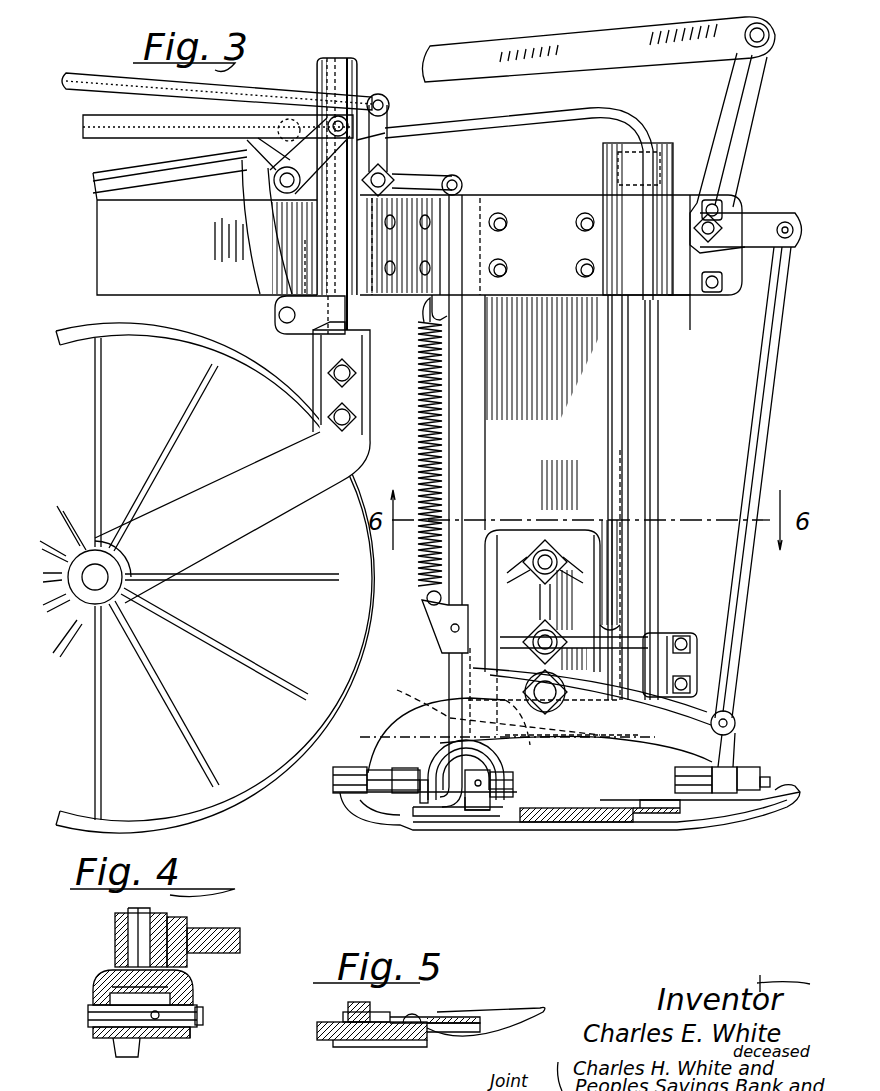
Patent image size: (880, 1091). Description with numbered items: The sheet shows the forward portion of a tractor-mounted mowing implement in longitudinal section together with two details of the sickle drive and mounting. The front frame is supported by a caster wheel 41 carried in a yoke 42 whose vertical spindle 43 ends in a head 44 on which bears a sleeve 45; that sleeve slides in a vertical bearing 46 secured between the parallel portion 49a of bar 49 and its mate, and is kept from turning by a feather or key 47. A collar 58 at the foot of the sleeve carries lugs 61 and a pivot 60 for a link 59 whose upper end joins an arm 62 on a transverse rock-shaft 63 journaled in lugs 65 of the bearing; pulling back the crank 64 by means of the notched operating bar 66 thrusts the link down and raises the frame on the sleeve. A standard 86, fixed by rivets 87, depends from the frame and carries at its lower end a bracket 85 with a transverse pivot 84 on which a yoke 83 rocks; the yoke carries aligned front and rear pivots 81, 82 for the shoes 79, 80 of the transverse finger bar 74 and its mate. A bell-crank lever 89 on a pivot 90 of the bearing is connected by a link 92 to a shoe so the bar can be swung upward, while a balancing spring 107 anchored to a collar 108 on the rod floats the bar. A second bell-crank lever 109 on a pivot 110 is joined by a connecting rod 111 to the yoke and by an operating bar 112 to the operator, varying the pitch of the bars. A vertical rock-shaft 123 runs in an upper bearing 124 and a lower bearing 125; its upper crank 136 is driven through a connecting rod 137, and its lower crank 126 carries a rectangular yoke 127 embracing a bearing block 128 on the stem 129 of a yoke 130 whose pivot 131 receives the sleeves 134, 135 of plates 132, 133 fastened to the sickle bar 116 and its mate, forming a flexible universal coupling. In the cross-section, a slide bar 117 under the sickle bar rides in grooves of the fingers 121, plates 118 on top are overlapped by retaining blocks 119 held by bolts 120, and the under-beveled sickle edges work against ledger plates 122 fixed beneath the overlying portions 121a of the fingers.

In FIG. 3, the caster wheel 41 is at (168, 344).
In FIG. 3, the yoke 42 is at (250, 480).
In FIG. 3, the vertical spindle 43 is at (342, 56).
In FIG. 3, the head 44 is at (313, 391).
In FIG. 3, the sleeve 45 is at (357, 70).
In FIG. 3, the vertical bearing 46 is at (244, 298).
In FIG. 3, the feather or key 47 is at (315, 72).
In FIG. 3, the bar 49 is at (364, 297).
In FIG. 3, the parallel portion of bar 49a is at (536, 205).
In FIG. 3, the collar or flange 58 is at (330, 330).
In FIG. 3, the link 59 is at (267, 257).
In FIG. 3, the pivot 60 is at (279, 316).
In FIG. 3, the lugs 61 is at (300, 336).
In FIG. 3, the arm 62 is at (275, 172).
In FIG. 3, the rock-shaft 63 is at (288, 184).
In FIG. 3, the crank 64 is at (275, 168).
In FIG. 3, the lugs 65 is at (293, 200).
In FIG. 3, the operating bar 66 is at (83, 127).
In FIG. 3, the transverse bar 74 is at (552, 824).
In FIG. 5, the transverse bar 74 is at (317, 1033).
In FIG. 3, the shoe 79 is at (372, 806).
In FIG. 3, the shoe 80 is at (420, 822).
In FIG. 3, the front pivot 81 is at (768, 777).
In FIG. 3, the rear pivot 82 is at (343, 792).
In FIG. 3, the yoke or bracket 83 is at (665, 743).
In FIG. 3, the transverse pivot 84 is at (577, 753).
In FIG. 3, the bracket 85 is at (600, 545).
In FIG. 3, the standard 86 is at (596, 400).
In FIG. 3, the rivets 87 is at (583, 268).
In FIG. 3, the bell-crank lever 89 is at (384, 116).
In FIG. 3, the pivot 90 is at (424, 182).
In FIG. 3, the link 92 is at (452, 663).
In FIG. 3, the balancing spring 107 is at (424, 448).
In FIG. 3, the collar 108 is at (457, 617).
In FIG. 3, the bell-crank lever 109 is at (738, 90).
In FIG. 3, the pivot 110 is at (710, 240).
In FIG. 3, the connecting rod 111 is at (762, 358).
In FIG. 3, the operating bar 112 is at (560, 70).
In FIG. 3, the sickle bar 116 is at (648, 818).
In FIG. 5, the sickle bar 116 is at (440, 1030).
In FIG. 3, the slide bar 117 is at (636, 820).
In FIG. 5, the slide bar 117 is at (427, 1033).
In FIG. 5, the plate 118 is at (383, 1025).
In FIG. 5, the retaining block 119 is at (380, 1022).
In FIG. 5, the bolt 120 is at (348, 1012).
In FIG. 5, the finger 121 is at (523, 1013).
In FIG. 5, the overlying portion of finger 121a is at (440, 1020).
In FIG. 5, the ledger plate 122 is at (467, 1018).
In FIG. 3, the rock-shaft 123 is at (650, 356).
In FIG. 3, the bearing 124 is at (672, 294).
In FIG. 3, the bearing 125 is at (664, 642).
In FIG. 3, the crank 126 is at (607, 740).
In FIG. 4, the crank 126 is at (240, 930).
In FIG. 3, the rectangular yoke 127 is at (563, 727).
In FIG. 4, the rectangular yoke 127 is at (174, 918).
In FIG. 3, the bearing block 128 is at (447, 693).
In FIG. 4, the bearing block 128 is at (117, 917).
In FIG. 3, the stem 129 is at (452, 680).
In FIG. 4, the stem 129 is at (140, 937).
In FIG. 3, the yoke 130 is at (443, 772).
In FIG. 4, the yoke 130 is at (95, 987).
In FIG. 3, the pivot 131 is at (512, 806).
In FIG. 4, the pivot 131 is at (88, 1010).
In FIG. 3, the plate 132 is at (452, 815).
In FIG. 4, the plate 132 is at (128, 1043).
In FIG. 3, the plate 133 is at (503, 812).
In FIG. 3, the sleeve 134 is at (440, 773).
In FIG. 4, the sleeve 134 is at (117, 1037).
In FIG. 3, the sleeve 135 is at (478, 812).
In FIG. 4, the sleeve 135 is at (163, 1037).
In FIG. 3, the crank 136 is at (652, 150).
In FIG. 3, the connecting rod 137 is at (505, 125).